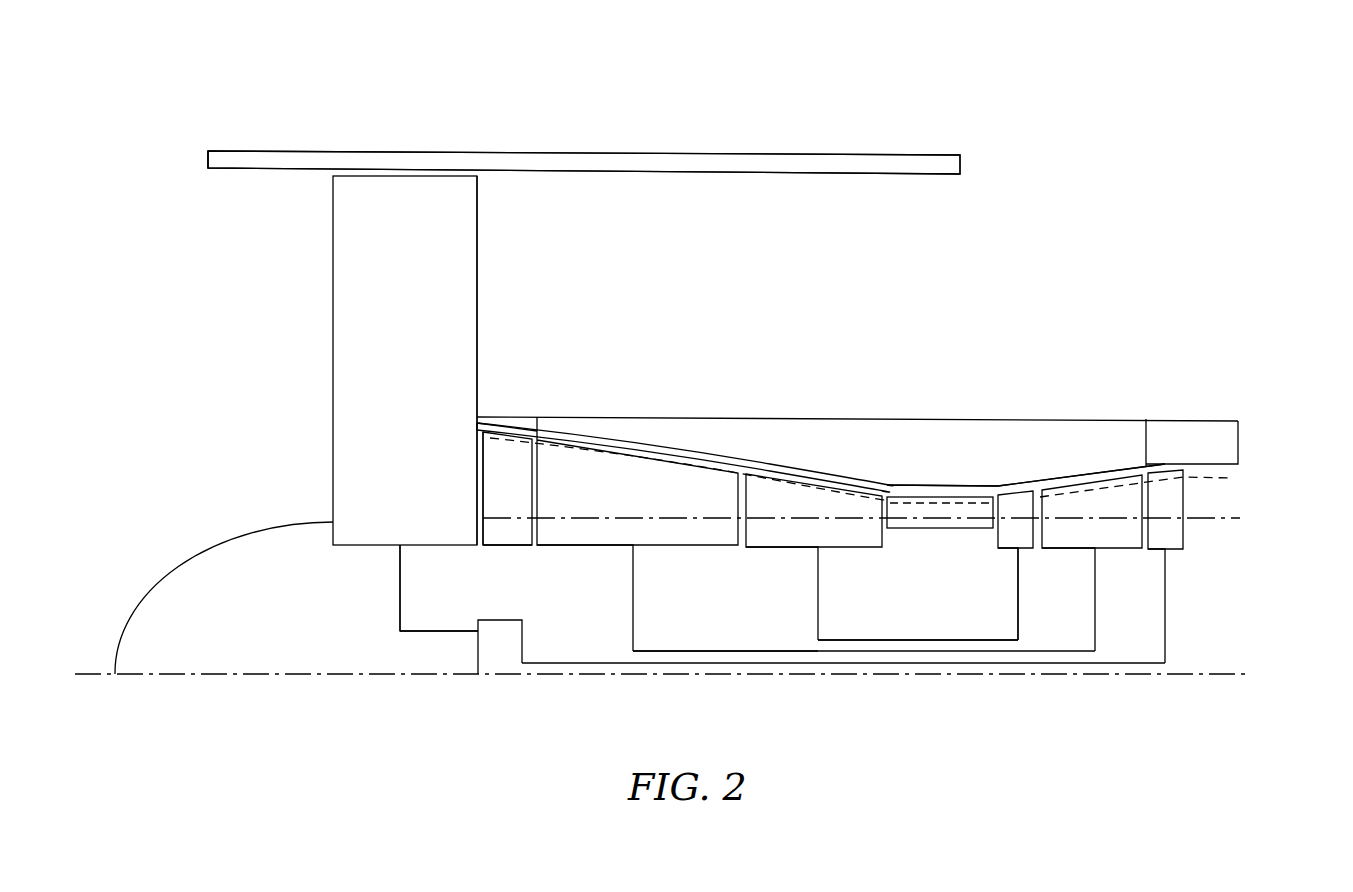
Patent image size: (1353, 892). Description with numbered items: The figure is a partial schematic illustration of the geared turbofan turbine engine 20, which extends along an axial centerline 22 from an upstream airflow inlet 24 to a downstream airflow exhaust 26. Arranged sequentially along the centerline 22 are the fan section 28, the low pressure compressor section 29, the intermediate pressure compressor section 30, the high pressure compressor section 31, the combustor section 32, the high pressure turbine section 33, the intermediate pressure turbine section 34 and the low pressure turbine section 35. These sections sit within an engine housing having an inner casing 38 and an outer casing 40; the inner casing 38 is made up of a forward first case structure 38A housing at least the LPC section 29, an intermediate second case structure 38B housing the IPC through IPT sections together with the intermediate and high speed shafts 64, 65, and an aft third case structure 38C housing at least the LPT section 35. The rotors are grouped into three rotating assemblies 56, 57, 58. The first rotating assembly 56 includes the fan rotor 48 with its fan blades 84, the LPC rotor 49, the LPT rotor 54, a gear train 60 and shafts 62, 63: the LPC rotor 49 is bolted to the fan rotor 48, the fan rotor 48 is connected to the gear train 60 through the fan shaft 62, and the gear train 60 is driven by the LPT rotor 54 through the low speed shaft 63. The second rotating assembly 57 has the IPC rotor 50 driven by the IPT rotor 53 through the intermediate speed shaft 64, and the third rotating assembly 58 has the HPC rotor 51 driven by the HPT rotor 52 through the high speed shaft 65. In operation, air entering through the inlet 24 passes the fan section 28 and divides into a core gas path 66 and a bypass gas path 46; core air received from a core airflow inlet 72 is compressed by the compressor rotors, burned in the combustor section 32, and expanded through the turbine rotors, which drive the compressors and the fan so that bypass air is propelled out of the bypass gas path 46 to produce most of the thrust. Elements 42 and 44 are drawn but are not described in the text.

The turbine engine 20 is at (158, 128).
The axial centerline 22 is at (1233, 680).
The airflow inlet 24 is at (208, 170).
The airflow exhaust 26 is at (1232, 478).
The fan section 28 is at (485, 276).
The low pressure compressor (LPC) section 29 is at (518, 418).
The intermediate pressure compressor (IPC) section 30 is at (612, 438).
The high pressure compressor (HPC) section 31 is at (808, 468).
The combustor section 32 is at (920, 478).
The high pressure turbine (HPT) section 33 is at (1020, 475).
The intermediate pressure turbine (IPT) section 34 is at (1100, 462).
The low pressure turbine (LPT) section 35 is at (1165, 455).
The inner casing 38 is at (972, 468).
The first case structure 38A is at (495, 412).
The second case structure 38B is at (708, 448).
The third case structure 38C is at (1188, 452).
The outer casing 40 is at (602, 150).
The nozzle exit frame 42 is at (1226, 419).
The wing lower surface 44 is at (818, 148).
The bypass gas path 46 is at (726, 291).
The fan rotor 48 is at (383, 547).
The LPC rotor 49 is at (505, 547).
The IPC rotor 50 is at (592, 547).
The HPC rotor 51 is at (775, 547).
The HPT rotor 52 is at (1002, 548).
The IPT rotor 53 is at (1062, 548).
The LPT rotor 54 is at (1173, 548).
The first rotating assembly 56 is at (430, 648).
The second rotating assembly 57 is at (618, 640).
The third rotating assembly 58 is at (800, 638).
The gear train 60 is at (496, 655).
The fan shaft 62 is at (410, 633).
The low speed shaft 63 is at (550, 665).
The intermediate speed shaft 64 is at (713, 652).
The high speed shaft 65 is at (918, 641).
The core gas path 66 is at (1208, 510).
The core airflow inlet 72 is at (481, 477).
The fan blades 84 is at (418, 365).